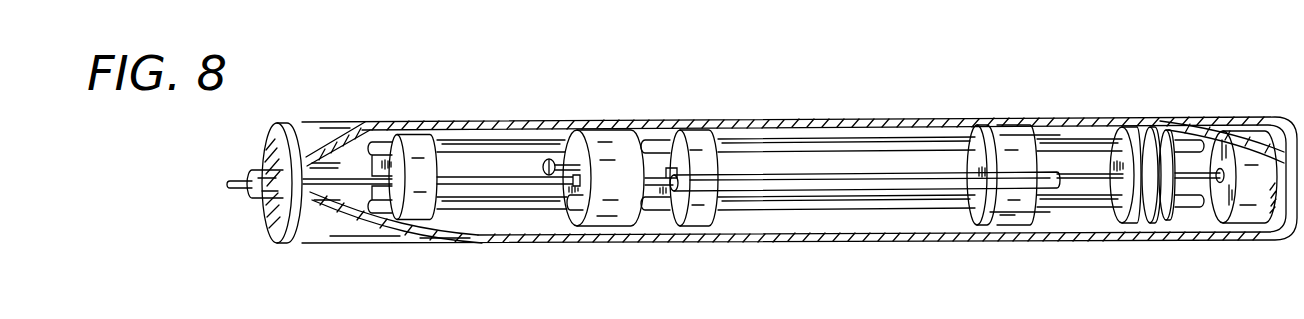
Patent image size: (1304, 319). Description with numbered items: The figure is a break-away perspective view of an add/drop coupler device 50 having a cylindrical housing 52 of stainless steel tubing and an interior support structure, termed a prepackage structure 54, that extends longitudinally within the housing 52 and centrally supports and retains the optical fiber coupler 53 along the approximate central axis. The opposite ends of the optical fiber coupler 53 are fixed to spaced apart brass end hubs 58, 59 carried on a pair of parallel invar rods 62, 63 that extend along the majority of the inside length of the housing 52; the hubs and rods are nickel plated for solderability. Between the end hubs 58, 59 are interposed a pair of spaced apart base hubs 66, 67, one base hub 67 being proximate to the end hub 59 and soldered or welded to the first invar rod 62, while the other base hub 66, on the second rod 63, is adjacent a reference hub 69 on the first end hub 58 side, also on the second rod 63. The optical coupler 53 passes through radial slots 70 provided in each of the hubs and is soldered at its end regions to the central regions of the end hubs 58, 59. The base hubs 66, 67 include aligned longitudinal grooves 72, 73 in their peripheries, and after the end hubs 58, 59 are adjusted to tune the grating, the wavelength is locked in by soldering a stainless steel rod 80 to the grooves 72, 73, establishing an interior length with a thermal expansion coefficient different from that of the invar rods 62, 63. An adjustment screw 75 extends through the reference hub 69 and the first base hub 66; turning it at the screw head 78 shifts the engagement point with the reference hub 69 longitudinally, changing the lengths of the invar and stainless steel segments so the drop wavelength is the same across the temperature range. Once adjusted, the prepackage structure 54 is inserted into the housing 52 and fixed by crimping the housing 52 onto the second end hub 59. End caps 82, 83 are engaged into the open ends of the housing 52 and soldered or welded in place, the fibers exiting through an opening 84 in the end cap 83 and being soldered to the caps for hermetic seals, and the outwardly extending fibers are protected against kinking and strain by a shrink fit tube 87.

The add/drop coupler device 50 is at (822, 99).
The cylindrical housing 52 is at (1079, 120).
The optical fiber coupler 53 is at (501, 167).
The prepackage structure 54 is at (852, 226).
The end hub 58 is at (413, 138).
The end hub 59 is at (1157, 123).
The first invar rod 62 is at (912, 137).
The second invar rod 63 is at (776, 211).
The first base hub 66 is at (690, 224).
The base hub 67 is at (1011, 136).
The reference hub 69 is at (618, 224).
The radial slots 70 is at (568, 203).
The longitudinal groove 72 is at (683, 170).
The longitudinal groove 73 is at (979, 127).
The adjustment screw 75 is at (583, 166).
The screw head 78 is at (551, 160).
The stainless steel rod 80 is at (912, 181).
The end cap 82 is at (336, 133).
The end cap 83 is at (1250, 209).
The stub shaft 84 is at (1220, 184).
The shrink fit tube 87 is at (258, 170).